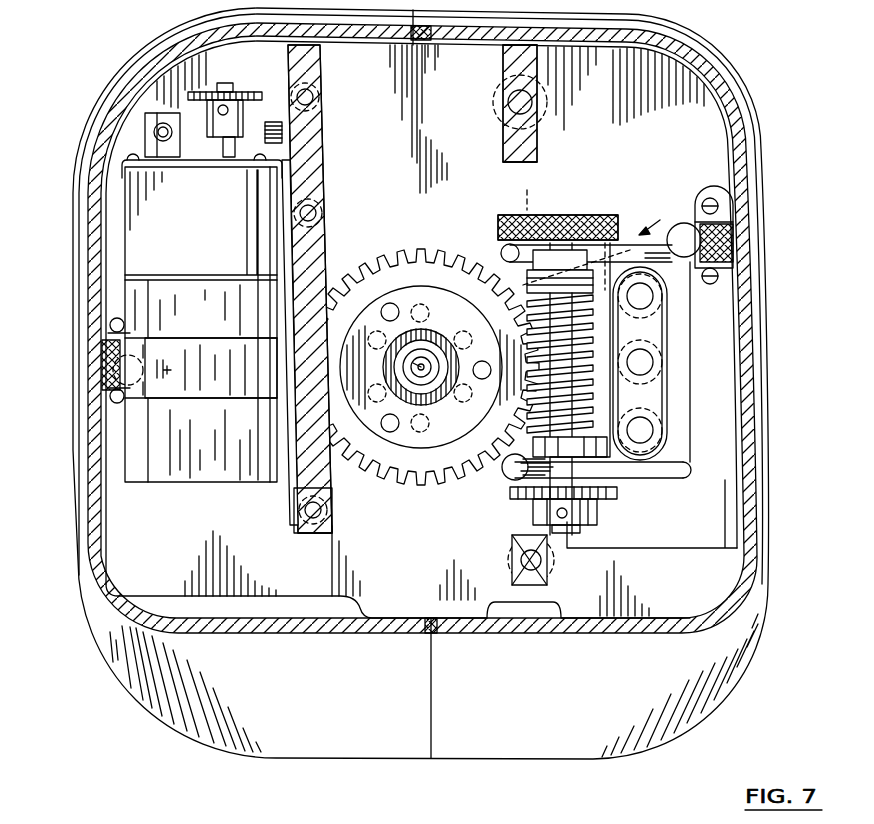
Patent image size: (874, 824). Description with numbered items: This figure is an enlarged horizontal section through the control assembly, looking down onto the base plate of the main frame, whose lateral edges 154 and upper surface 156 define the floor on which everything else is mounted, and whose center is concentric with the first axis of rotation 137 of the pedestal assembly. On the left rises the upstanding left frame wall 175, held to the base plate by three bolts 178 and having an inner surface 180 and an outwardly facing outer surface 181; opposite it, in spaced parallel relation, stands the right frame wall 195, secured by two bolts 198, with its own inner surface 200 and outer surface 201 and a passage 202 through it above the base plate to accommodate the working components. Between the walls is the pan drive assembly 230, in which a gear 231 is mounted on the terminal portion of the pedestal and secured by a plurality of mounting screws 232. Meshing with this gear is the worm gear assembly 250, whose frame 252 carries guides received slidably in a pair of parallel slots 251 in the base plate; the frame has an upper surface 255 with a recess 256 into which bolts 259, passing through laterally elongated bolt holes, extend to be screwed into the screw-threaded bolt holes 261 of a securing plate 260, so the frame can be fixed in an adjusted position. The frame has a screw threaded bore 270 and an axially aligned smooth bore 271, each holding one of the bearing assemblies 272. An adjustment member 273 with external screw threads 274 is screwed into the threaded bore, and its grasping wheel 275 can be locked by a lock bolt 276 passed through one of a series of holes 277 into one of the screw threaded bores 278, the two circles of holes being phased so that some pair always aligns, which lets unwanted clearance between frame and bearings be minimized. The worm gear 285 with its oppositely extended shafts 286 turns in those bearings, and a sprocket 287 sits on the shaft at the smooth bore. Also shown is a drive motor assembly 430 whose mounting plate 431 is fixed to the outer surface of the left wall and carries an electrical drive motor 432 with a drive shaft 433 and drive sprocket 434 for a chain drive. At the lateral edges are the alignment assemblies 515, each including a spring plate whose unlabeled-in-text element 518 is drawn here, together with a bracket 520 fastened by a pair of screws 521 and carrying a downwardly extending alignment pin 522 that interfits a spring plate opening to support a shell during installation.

The first axis of rotation 137 is at (405, 258).
The lateral edges 154 is at (685, 99).
The upper surface 156 is at (646, 150).
The left frame wall 175 is at (312, 158).
The bolts 178 is at (320, 95).
The inner surface 180 is at (321, 74).
The outer surface 181 is at (290, 67).
The right frame wall 195 is at (533, 141).
The bolts 198 is at (492, 110).
The inner surface 200 is at (503, 65).
The outer surface 201 is at (538, 69).
The passage 202 is at (503, 163).
The pan drive assembly 230 is at (653, 551).
The gear 231 is at (400, 262).
The mounting screws 232 is at (420, 446).
The worm gear assembly 250 is at (668, 222).
The parallel slots 251 is at (662, 291).
The frame 252 is at (643, 471).
The upper surface 255 is at (615, 474).
The recess 256 is at (673, 351).
The bolts 259 is at (648, 362).
The securing plate 260 is at (667, 398).
The screw-threaded bolt holes 261 is at (655, 331).
The screw threaded bore 270 is at (580, 219).
The smooth bore 271 is at (513, 484).
The bearing assemblies 272 is at (517, 309).
The adjustment member 273 is at (517, 213).
The external screw threads 274 is at (525, 292).
The grasping wheel 275 is at (633, 218).
The lock bolt 276 is at (613, 218).
The holes 277 is at (603, 200).
The screw threaded bores 278 is at (535, 282).
The worm gear 285 is at (480, 422).
The shafts 286 is at (522, 201).
The sprocket 287 is at (523, 504).
The drive motor assembly 430 is at (177, 488).
The mounting plate 431 is at (283, 198).
The electrical drive motor 432 is at (241, 311).
The drive shaft 433 is at (221, 149).
The drive sprocket 434 is at (206, 90).
The alignment assemblies 515 is at (742, 227).
The screw 518 is at (110, 325).
The bracket 520 is at (103, 361).
The screws 521 is at (147, 347).
The alignment pin 522 is at (131, 366).